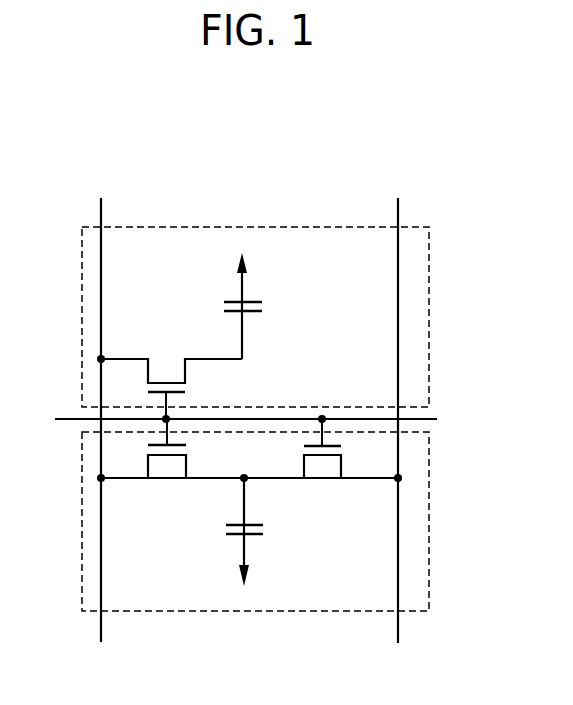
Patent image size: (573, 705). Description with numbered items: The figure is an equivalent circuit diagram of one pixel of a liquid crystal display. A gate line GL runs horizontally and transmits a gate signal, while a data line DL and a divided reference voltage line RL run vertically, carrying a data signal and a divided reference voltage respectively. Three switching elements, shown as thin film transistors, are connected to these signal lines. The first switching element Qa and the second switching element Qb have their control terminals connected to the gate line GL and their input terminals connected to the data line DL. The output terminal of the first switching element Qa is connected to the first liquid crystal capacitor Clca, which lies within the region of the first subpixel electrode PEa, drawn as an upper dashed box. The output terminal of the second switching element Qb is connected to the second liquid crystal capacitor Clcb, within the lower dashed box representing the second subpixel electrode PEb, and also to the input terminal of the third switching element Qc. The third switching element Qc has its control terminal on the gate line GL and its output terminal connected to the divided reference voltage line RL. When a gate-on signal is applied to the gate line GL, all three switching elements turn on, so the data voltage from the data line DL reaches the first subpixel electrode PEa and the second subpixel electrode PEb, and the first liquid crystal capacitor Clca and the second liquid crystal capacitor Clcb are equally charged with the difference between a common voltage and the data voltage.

The data line DL is at (101, 407).
The divided reference voltage line RL is at (398, 408).
The gate line GL is at (231, 422).
The first switching element Qa is at (169, 380).
The second switching element Qb is at (167, 463).
The third switching element Qc is at (322, 461).
The first liquid crystal capacitor Clca is at (265, 306).
The second liquid crystal capacitor Clcb is at (267, 532).
The first subpixel electrode PEa is at (429, 317).
The second subpixel electrode PEb is at (429, 521).